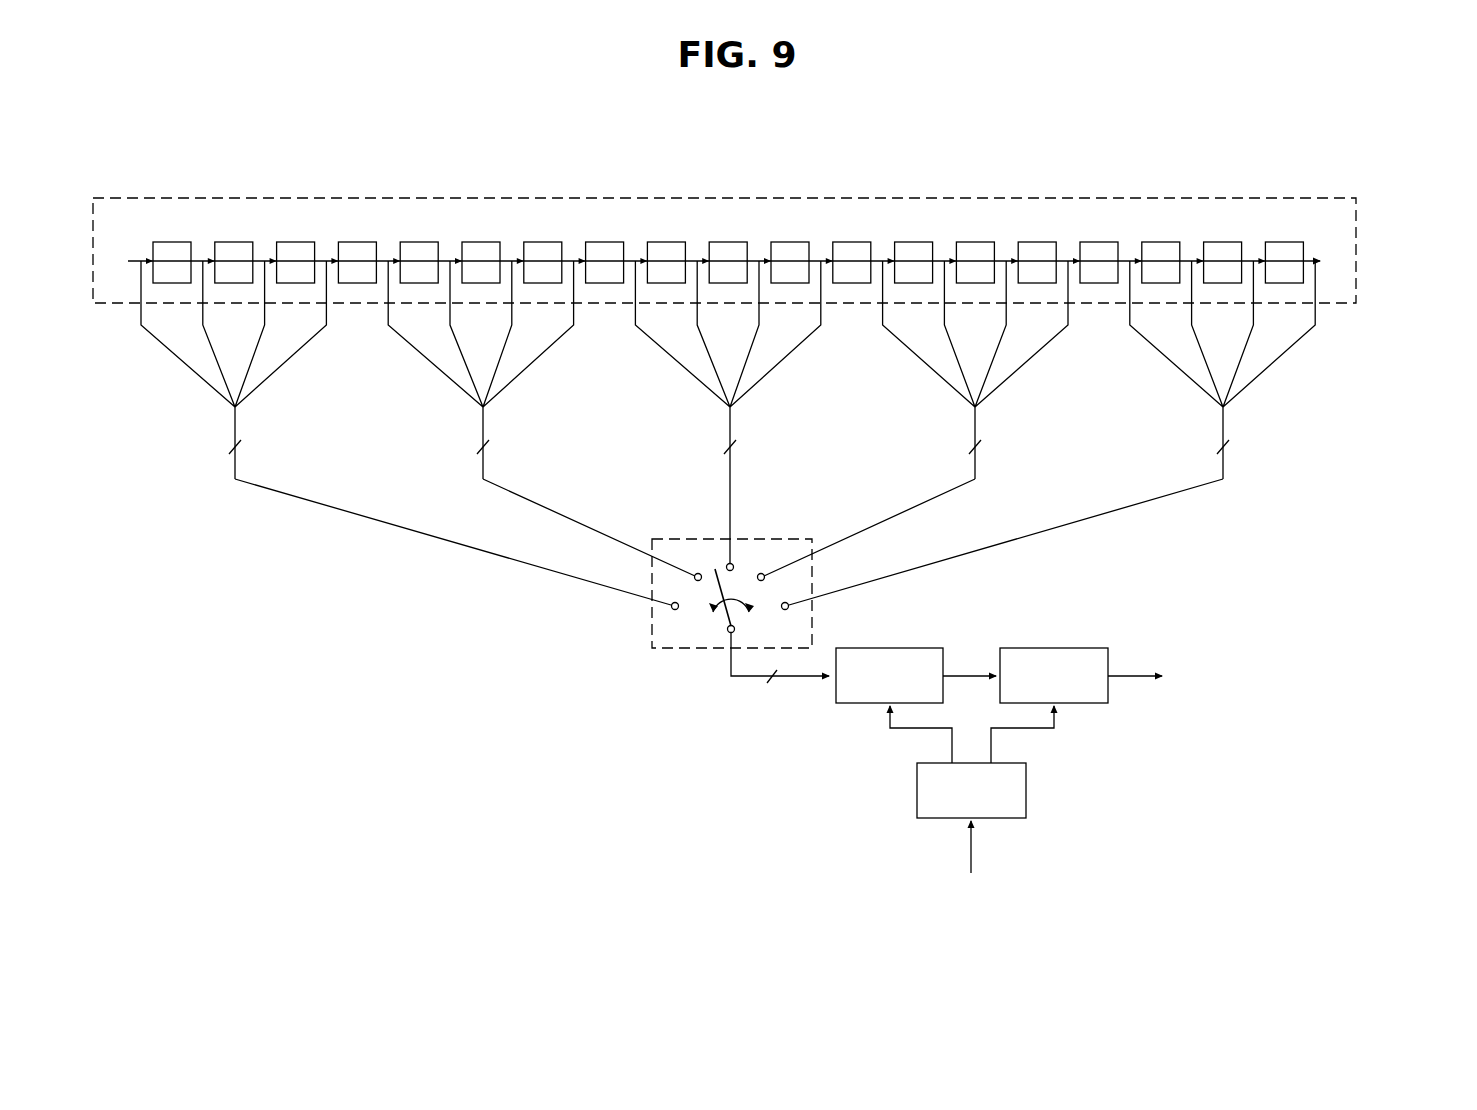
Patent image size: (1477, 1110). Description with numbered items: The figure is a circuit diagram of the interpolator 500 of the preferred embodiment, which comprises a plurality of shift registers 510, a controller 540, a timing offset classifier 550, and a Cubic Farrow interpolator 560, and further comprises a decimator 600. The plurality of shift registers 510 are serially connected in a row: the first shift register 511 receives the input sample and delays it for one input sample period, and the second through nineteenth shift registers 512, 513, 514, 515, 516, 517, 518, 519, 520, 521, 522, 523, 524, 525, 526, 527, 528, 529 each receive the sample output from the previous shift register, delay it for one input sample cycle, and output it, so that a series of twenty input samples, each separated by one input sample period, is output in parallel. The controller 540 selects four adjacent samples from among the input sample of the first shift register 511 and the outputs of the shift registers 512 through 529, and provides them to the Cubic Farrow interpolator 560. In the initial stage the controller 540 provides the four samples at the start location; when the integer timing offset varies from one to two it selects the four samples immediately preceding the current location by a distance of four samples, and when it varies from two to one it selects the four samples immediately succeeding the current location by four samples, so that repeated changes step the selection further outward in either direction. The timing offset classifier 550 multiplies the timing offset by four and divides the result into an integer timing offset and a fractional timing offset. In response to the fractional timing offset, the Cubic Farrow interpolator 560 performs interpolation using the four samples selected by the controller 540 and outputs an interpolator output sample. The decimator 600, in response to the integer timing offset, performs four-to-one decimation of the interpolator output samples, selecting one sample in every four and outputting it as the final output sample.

The interpolator 500 is at (1313, 155).
The plurality of shift registers 510 is at (1240, 196).
The first shift register 511 is at (170, 239).
The second shift register 512 is at (232, 239).
The third shift register 513 is at (294, 239).
The fourth shift register 514 is at (355, 239).
The fifth shift register 515 is at (417, 239).
The sixth shift register 516 is at (479, 239).
The seventh shift register 517 is at (541, 239).
The eighth shift register 518 is at (603, 239).
The ninth shift register 519 is at (664, 239).
The tenth shift register 520 is at (726, 239).
The eleventh shift register 521 is at (788, 239).
The twelfth shift register 522 is at (850, 239).
The thirteenth shift register 523 is at (912, 239).
The fourteenth shift register 524 is at (973, 239).
The fifteenth shift register 525 is at (1035, 239).
The sixteenth shift register 526 is at (1097, 239).
The seventeenth shift register 527 is at (1159, 239).
The eighteenth shift register 528 is at (1221, 239).
The nineteenth shift register 529 is at (1282, 239).
The controller 540 is at (652, 628).
The timing offset classifier 550 is at (1030, 789).
The Cubic Farrow interpolator 560 is at (896, 645).
The decimator 600 is at (1058, 645).